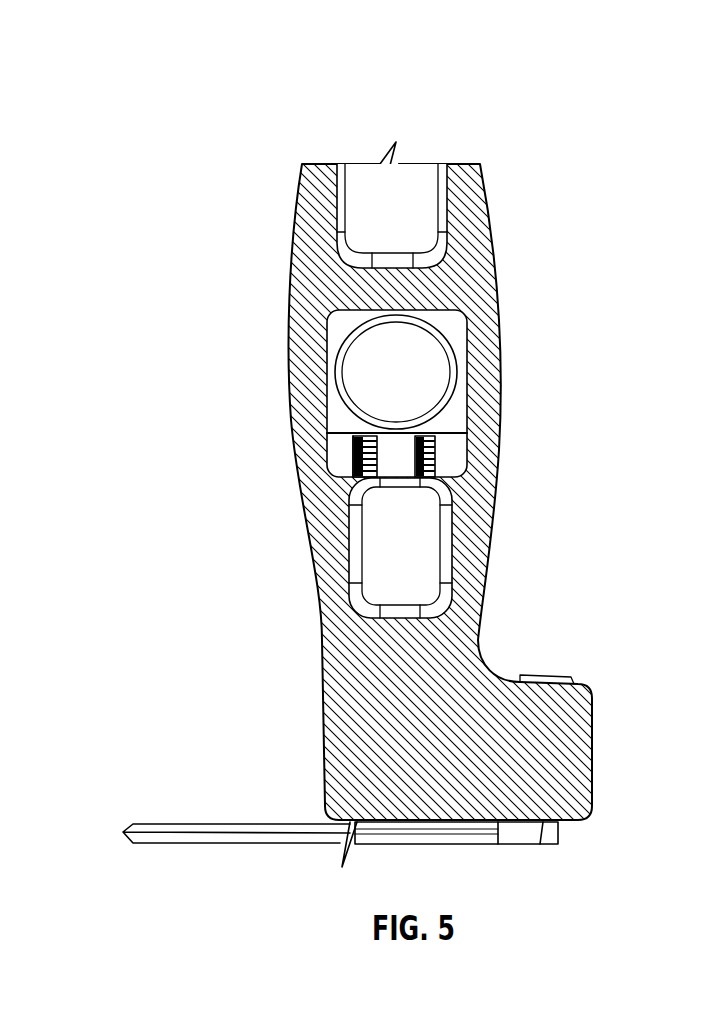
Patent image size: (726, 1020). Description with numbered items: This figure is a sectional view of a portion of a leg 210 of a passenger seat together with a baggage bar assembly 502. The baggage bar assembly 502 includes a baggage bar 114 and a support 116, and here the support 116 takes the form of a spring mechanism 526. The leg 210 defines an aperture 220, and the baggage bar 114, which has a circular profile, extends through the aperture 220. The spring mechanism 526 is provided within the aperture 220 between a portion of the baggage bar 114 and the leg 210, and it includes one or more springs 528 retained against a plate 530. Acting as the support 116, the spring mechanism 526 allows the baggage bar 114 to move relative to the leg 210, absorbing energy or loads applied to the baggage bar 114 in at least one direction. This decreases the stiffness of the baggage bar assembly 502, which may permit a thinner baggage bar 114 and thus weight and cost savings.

The baggage bar assembly 502 is at (245, 142).
The leg 210 is at (481, 275).
The aperture 220 is at (468, 384).
The plate 530 is at (447, 437).
The baggage bar 114 is at (340, 352).
The support 116 is at (355, 450).
The spring mechanism 526 is at (436, 440).
The spring 528 is at (356, 457).